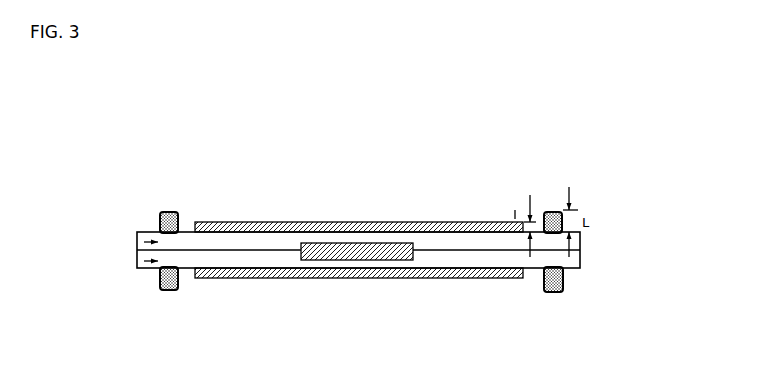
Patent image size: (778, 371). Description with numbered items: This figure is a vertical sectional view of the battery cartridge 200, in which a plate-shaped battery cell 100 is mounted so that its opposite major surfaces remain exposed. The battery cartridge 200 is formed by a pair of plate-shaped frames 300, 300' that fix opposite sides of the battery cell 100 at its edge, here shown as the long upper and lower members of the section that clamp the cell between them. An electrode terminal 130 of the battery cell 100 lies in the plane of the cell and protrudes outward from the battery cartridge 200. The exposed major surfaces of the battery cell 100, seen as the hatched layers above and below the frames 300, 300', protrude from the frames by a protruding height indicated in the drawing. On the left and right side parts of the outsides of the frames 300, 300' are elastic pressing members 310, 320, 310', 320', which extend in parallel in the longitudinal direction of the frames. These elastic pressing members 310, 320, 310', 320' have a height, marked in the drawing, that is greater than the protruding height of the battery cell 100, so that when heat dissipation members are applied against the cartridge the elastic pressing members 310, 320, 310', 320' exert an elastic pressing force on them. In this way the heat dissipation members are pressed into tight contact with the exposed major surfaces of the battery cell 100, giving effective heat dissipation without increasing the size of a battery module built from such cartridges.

The battery cartridge 200 is at (68, 102).
The battery cell 100 is at (483, 223).
The electrode terminal 130 is at (358, 260).
The frame 300 is at (322, 252).
The frame 300' is at (113, 281).
The elastic pressing member 310 is at (116, 217).
The elastic pressing member 310' is at (123, 302).
The elastic pressing member 320 is at (576, 183).
The elastic pressing member 320' is at (594, 296).